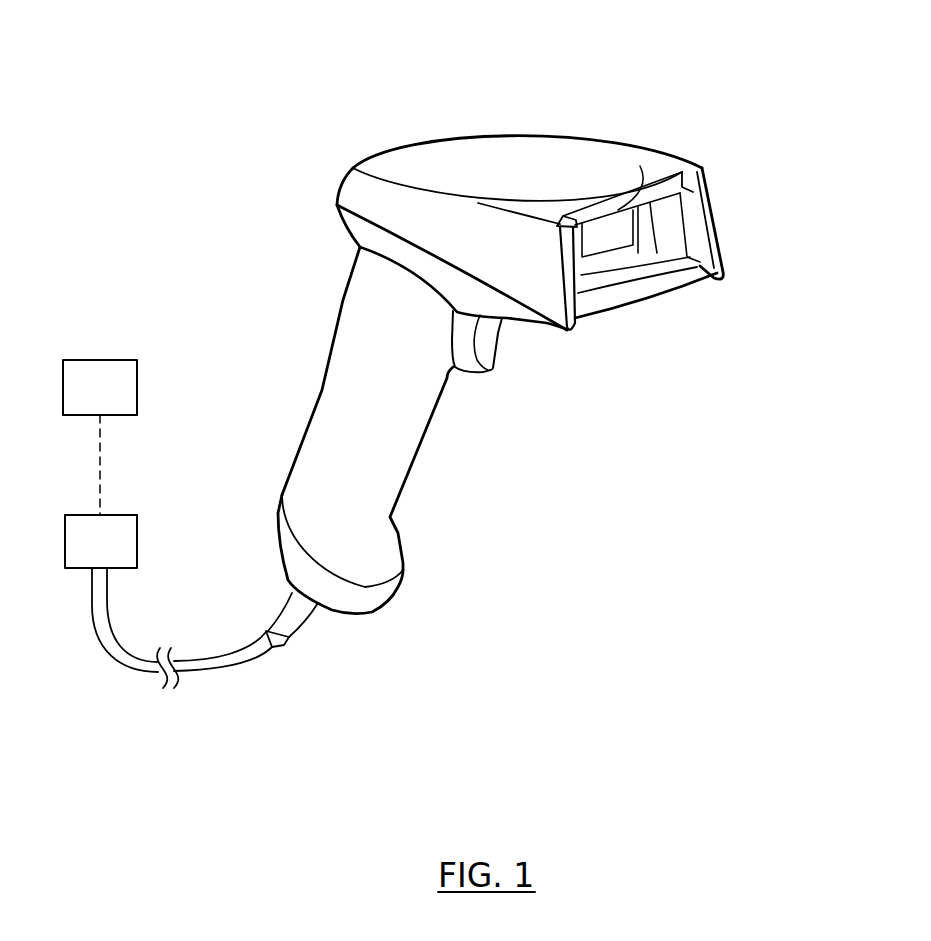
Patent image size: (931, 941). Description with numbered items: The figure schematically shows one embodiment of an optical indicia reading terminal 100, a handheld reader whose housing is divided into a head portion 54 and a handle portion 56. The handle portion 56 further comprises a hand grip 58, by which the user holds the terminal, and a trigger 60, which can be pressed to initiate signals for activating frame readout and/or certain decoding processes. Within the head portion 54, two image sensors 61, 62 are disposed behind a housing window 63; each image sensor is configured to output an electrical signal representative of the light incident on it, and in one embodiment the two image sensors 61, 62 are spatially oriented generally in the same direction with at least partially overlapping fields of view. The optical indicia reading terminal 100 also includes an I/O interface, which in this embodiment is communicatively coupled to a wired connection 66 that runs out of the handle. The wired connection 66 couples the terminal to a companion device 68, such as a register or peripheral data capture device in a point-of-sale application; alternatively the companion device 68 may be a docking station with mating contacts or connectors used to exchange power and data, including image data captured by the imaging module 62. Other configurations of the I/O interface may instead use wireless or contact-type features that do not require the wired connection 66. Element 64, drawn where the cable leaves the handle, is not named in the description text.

The optical indicia reading terminal 100 is at (712, 75).
The head portion 54 is at (738, 160).
The handle portion 56 is at (438, 478).
The hand grip 58 is at (322, 390).
The trigger 60 is at (488, 350).
The image sensor 61 is at (637, 173).
The image sensor 62 is at (637, 173).
The housing window 63 is at (610, 235).
The cable strain relief 64 is at (318, 637).
The wired connection 66 is at (86, 553).
The companion device 68 is at (85, 397).